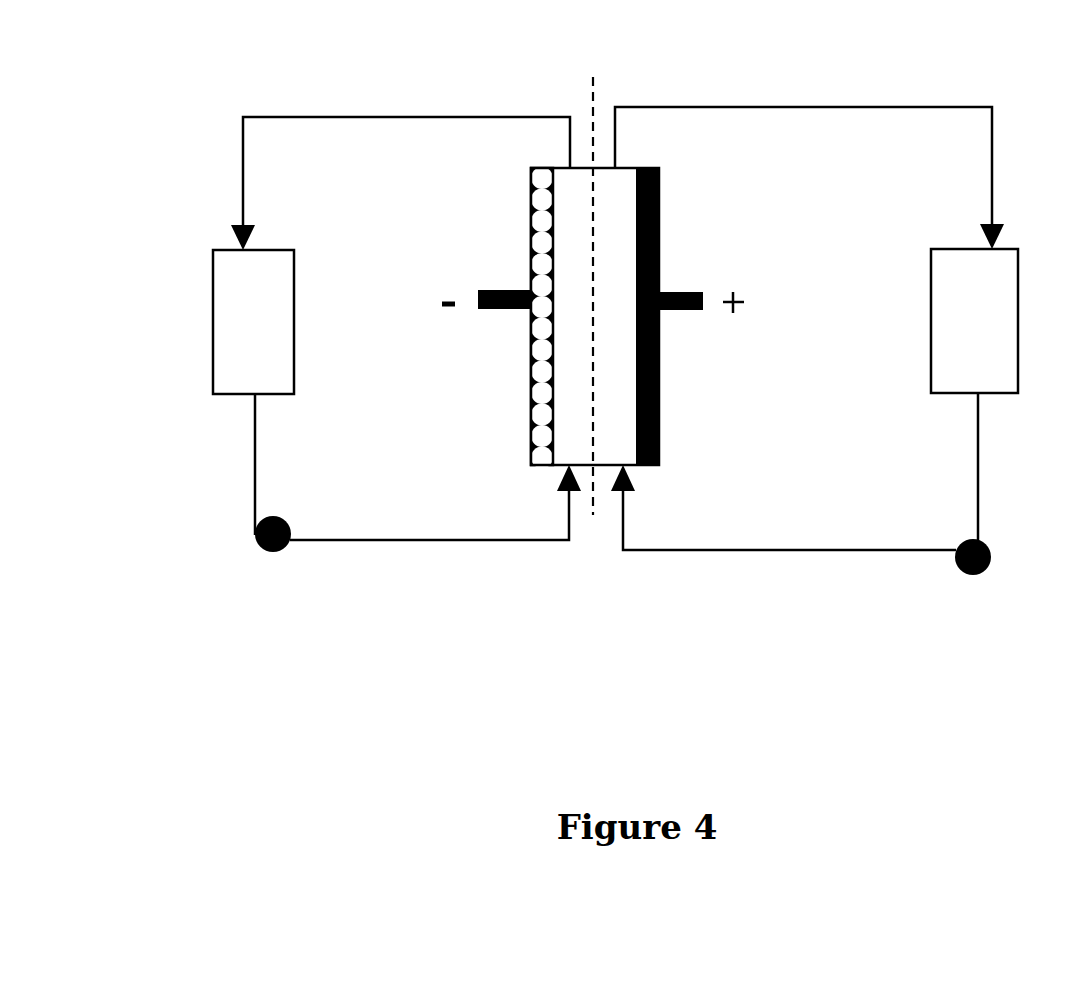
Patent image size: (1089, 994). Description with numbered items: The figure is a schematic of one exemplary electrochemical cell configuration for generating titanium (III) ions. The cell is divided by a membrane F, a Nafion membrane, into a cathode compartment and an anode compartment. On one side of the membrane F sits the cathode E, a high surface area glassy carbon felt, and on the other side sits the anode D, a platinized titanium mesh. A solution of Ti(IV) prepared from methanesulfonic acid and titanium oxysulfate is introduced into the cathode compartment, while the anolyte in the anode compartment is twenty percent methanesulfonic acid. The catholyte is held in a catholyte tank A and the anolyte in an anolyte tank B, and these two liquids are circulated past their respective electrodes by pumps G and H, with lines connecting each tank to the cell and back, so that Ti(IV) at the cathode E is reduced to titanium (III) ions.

The catholyte tank A is at (253, 322).
The anolyte tank B is at (974, 321).
The anode D is at (657, 316).
The cathode E is at (525, 318).
The membrane F is at (597, 276).
The catholyte pump G is at (271, 560).
The anolyte pump H is at (990, 558).